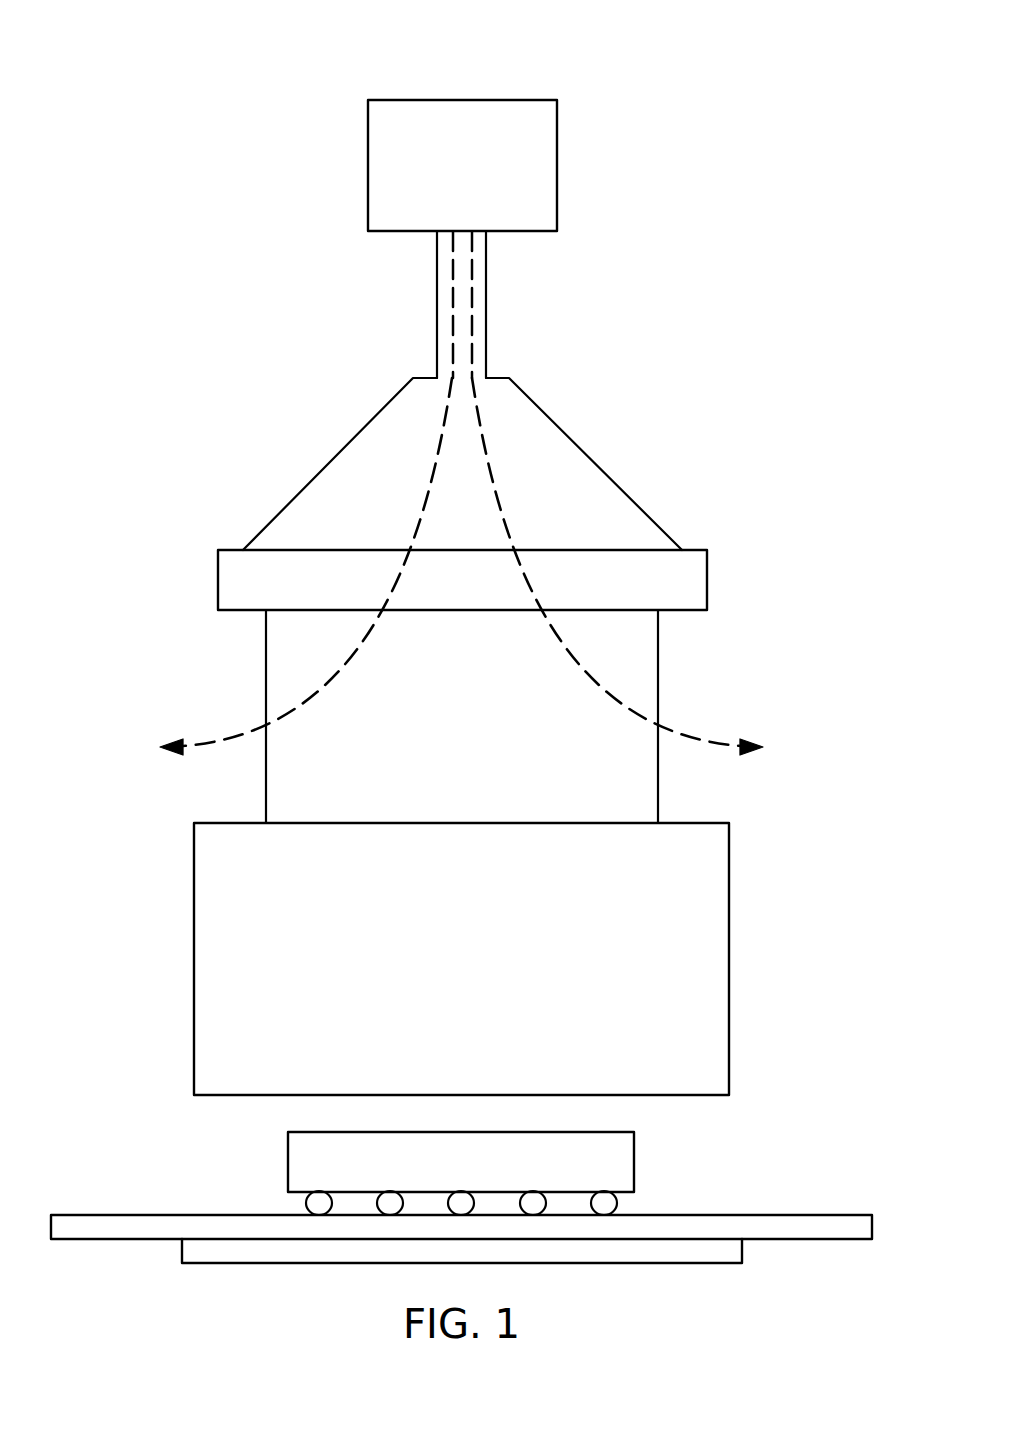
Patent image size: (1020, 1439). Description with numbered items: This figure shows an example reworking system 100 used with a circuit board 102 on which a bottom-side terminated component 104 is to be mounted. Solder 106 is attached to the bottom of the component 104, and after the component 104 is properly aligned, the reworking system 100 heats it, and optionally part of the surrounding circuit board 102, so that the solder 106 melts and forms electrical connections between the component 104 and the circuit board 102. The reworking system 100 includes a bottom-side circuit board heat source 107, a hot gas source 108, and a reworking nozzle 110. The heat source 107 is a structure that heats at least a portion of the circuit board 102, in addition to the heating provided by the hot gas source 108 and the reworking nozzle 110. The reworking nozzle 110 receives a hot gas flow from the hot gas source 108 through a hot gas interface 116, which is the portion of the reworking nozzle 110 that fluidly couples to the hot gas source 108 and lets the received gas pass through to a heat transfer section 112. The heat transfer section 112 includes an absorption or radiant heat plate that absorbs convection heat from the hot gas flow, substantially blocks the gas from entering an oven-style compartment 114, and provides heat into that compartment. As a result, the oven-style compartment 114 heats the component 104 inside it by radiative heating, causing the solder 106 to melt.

The reworking system 100 is at (298, 62).
The circuit board 102 is at (773, 1213).
The bottom-side terminated component 104 is at (288, 1162).
The solder 106 is at (320, 1230).
The bottom-side circuit board heat source 107 is at (685, 1265).
The hot gas source 108 is at (368, 165).
The reworking nozzle 110 is at (661, 323).
The heat transfer section 112 is at (265, 711).
The oven-style compartment 114 is at (194, 960).
The hot gas interface 116 is at (327, 465).